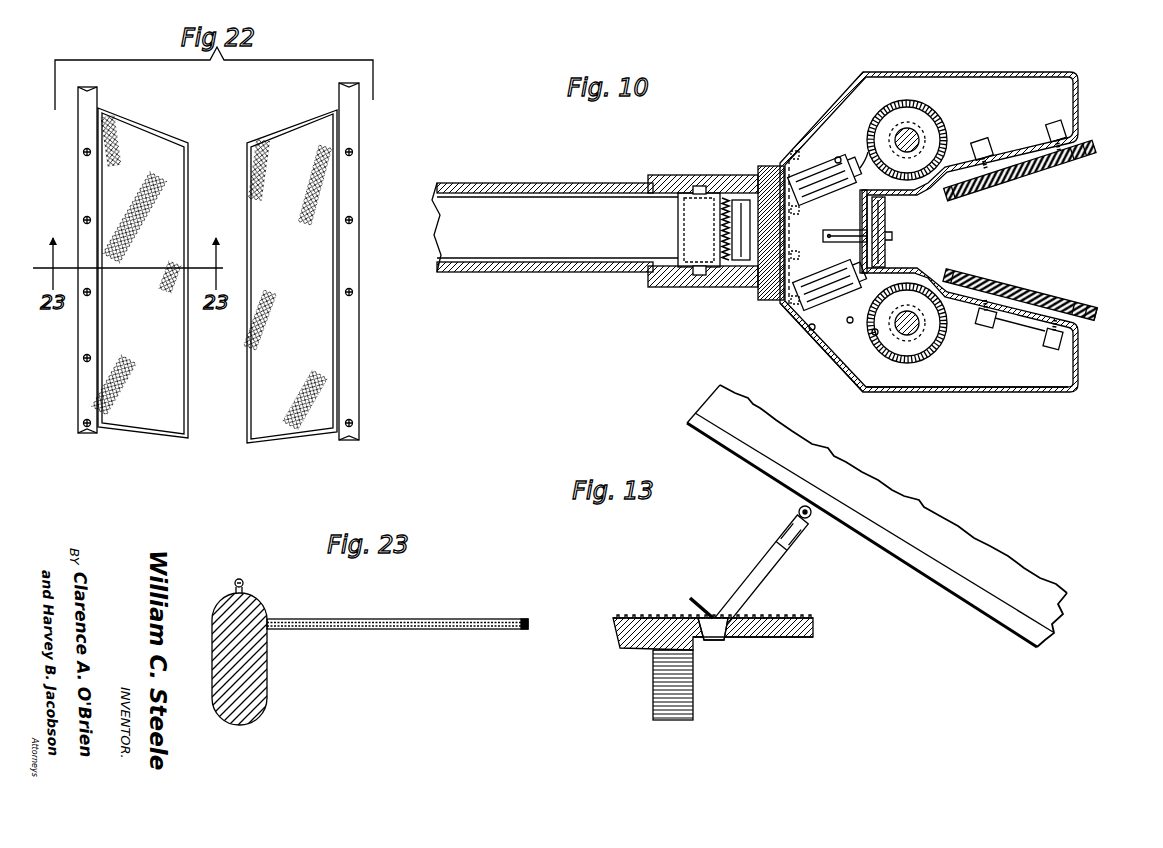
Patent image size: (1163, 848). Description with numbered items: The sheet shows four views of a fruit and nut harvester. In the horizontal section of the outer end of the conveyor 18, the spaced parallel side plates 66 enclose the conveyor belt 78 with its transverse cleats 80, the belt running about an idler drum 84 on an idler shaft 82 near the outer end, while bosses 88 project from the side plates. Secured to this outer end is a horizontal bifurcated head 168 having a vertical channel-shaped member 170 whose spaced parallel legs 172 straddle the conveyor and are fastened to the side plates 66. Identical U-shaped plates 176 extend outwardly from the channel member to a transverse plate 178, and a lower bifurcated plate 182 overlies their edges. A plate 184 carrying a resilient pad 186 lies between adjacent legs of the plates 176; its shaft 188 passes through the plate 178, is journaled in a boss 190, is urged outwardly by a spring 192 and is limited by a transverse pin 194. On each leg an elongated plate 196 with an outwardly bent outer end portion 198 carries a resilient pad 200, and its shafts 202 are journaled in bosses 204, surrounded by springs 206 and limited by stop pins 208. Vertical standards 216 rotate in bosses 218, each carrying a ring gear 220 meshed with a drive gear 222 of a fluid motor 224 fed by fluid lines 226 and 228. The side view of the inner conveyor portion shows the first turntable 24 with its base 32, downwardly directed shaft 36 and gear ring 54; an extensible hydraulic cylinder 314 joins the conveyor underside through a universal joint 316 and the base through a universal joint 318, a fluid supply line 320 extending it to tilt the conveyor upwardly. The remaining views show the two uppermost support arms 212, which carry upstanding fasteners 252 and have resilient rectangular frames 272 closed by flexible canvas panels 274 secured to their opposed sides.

In FIG. 10, the conveyor 18 is at (555, 226).
In FIG. 13, the conveyor 18 is at (968, 608).
In FIG. 13, the first turntable 24 is at (713, 630).
In FIG. 13, the base 32 is at (740, 646).
In FIG. 13, the shaft 36 is at (660, 667).
In FIG. 13, the gear ring 54 is at (778, 616).
In FIG. 10, the side plates 66 is at (588, 182).
In FIG. 10, the conveyor belt 78 is at (525, 250).
In FIG. 10, the transverse cleats 80 is at (741, 258).
In FIG. 10, the idler shaft 82 is at (695, 278).
In FIG. 10, the idler drum 84 is at (678, 230).
In FIG. 10, the bosses 88 is at (697, 184).
In FIG. 10, the bifurcated head 168 is at (815, 350).
In FIG. 10, the channel-shaped member 170 is at (772, 298).
In FIG. 10, the legs 172 is at (718, 175).
In FIG. 10, the U-shaped plates 176 is at (975, 72).
In FIG. 10, the transverse plate 178 is at (884, 270).
In FIG. 10, the lower bifurcated plate 182 is at (1025, 378).
In FIG. 10, the plate 184 is at (885, 208).
In FIG. 10, the resilient pad 186 is at (888, 236).
In FIG. 10, the shaft 188 is at (828, 178).
In FIG. 10, the boss 190 is at (826, 240).
In FIG. 10, the spring 192 is at (885, 222).
In FIG. 10, the transverse pin 194 is at (828, 233).
In FIG. 10, the elongated plate 196 is at (1025, 183).
In FIG. 10, the outwardly bent outer end portion 198 is at (1086, 330).
In FIG. 10, the resilient pad 200 is at (1075, 165).
In FIG. 10, the shafts 202 is at (985, 140).
In FIG. 10, the bosses 204 is at (997, 322).
In FIG. 10, the springs 206 is at (1097, 141).
In FIG. 10, the stop pins 208 is at (992, 150).
In FIG. 10, the vertical standards 216 is at (910, 135).
In FIG. 10, the bosses 218 is at (893, 340).
In FIG. 10, the ring gear 220 is at (948, 128).
In FIG. 10, the drive gear 222 is at (873, 335).
In FIG. 10, the fluid motor 224 is at (840, 157).
In FIG. 10, the fluid line 226 is at (809, 328).
In FIG. 10, the fluid line 228 is at (831, 283).
In FIG. 22, the support arms 212 is at (83, 127).
In FIG. 23, the support arms 212 is at (269, 677).
In FIG. 22, the fasteners 252 is at (83, 421).
In FIG. 23, the fasteners 252 is at (236, 579).
In FIG. 22, the frames 272 is at (185, 138).
In FIG. 23, the frames 272 is at (528, 620).
In FIG. 22, the flexible panels 274 is at (172, 222).
In FIG. 23, the flexible panels 274 is at (478, 618).
In FIG. 13, the extensible hydraulic cylinder 314 is at (753, 565).
In FIG. 13, the universal joint 316 is at (798, 508).
In FIG. 13, the universal joint 318 is at (713, 640).
In FIG. 13, the fluid supply line 320 is at (703, 598).